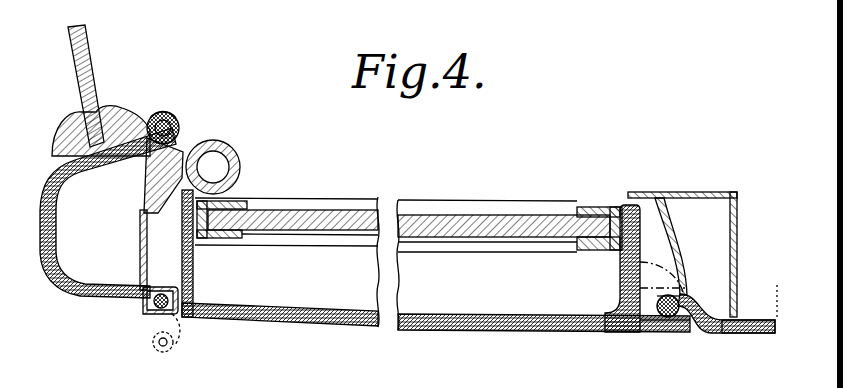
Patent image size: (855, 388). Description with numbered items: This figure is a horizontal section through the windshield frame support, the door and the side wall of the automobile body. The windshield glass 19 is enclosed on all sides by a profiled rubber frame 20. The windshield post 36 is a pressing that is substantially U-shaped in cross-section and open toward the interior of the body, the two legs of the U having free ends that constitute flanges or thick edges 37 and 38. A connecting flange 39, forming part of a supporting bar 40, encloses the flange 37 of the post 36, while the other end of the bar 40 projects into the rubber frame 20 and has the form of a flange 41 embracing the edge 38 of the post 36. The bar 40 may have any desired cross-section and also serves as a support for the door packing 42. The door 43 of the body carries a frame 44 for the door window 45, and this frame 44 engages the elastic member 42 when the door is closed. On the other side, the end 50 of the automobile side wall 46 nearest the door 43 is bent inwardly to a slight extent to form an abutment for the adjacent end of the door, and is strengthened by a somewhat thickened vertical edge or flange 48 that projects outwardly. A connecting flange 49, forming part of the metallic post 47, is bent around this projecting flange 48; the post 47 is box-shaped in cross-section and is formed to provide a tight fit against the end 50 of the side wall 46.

The windshield glass 19 is at (95, 58).
The profiled rubber frame 20 is at (68, 126).
The windshield post 36 is at (74, 284).
The flange 37 is at (150, 316).
The flange 38 is at (179, 124).
The connecting flange 39 is at (150, 332).
The supporting bar 40 is at (147, 247).
The flange 41 is at (172, 102).
The door packing 42 is at (232, 147).
The door 43 is at (305, 325).
The frame 44 is at (560, 212).
The door window 45 is at (313, 210).
The automobile side wall 46 is at (757, 333).
The metallic post 47 is at (738, 233).
The flange 48 is at (665, 320).
The connecting flange 49 is at (650, 332).
The end of side wall 50 is at (700, 306).